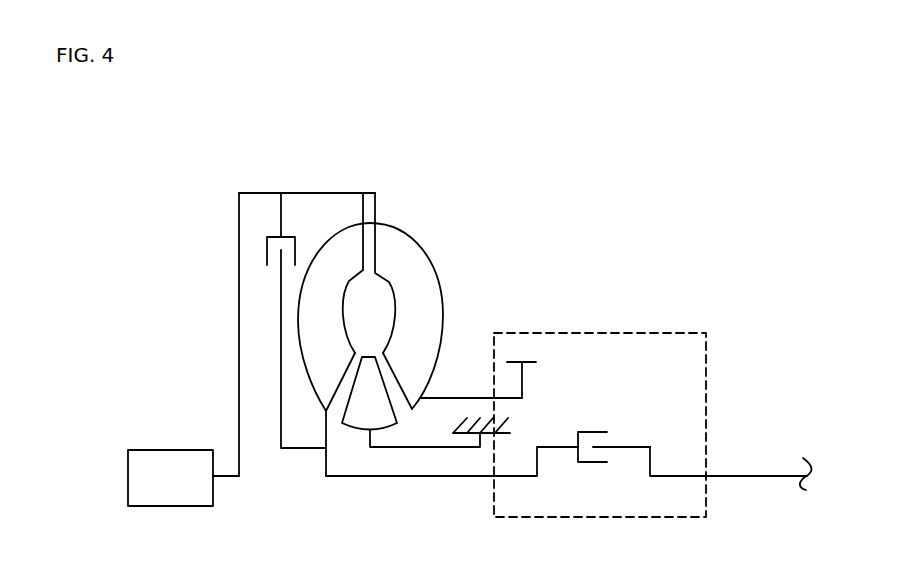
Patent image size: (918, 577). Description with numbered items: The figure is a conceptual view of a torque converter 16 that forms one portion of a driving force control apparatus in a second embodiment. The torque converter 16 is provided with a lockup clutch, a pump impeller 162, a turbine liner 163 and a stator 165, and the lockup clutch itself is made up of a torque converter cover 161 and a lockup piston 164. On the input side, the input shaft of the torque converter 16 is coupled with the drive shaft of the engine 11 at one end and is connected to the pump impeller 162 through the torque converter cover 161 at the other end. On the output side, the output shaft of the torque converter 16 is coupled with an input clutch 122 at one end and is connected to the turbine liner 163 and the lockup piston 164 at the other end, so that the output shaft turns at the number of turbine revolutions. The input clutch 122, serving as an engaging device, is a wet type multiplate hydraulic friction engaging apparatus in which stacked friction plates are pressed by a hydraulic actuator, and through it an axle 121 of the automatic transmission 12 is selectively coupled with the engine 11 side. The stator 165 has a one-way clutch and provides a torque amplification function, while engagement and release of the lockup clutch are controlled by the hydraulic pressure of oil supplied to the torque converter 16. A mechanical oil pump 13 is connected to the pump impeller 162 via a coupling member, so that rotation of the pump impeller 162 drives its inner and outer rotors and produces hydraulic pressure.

The engine 11 is at (158, 449).
The automatic transmission 12 is at (675, 332).
The axle 121 is at (680, 471).
The input clutch 122 is at (590, 465).
The mechanical oil pump 13 is at (523, 356).
The torque converter 16 is at (264, 137).
The torque converter cover 161 is at (350, 192).
The pump impeller 162 is at (408, 247).
The turbine liner 163 is at (346, 244).
The lockup piston 164 is at (295, 449).
The stator 165 is at (352, 418).